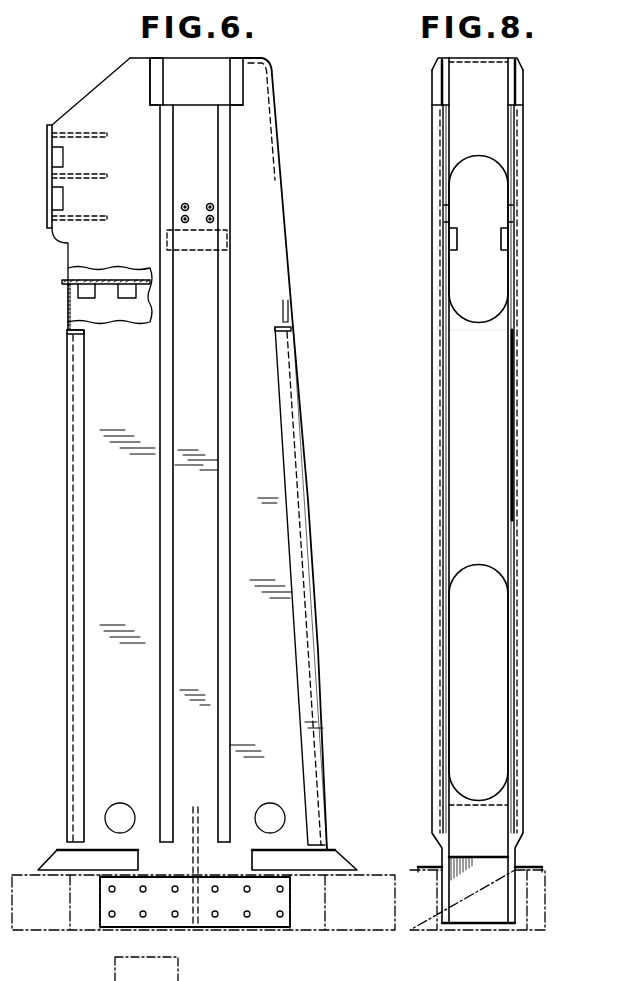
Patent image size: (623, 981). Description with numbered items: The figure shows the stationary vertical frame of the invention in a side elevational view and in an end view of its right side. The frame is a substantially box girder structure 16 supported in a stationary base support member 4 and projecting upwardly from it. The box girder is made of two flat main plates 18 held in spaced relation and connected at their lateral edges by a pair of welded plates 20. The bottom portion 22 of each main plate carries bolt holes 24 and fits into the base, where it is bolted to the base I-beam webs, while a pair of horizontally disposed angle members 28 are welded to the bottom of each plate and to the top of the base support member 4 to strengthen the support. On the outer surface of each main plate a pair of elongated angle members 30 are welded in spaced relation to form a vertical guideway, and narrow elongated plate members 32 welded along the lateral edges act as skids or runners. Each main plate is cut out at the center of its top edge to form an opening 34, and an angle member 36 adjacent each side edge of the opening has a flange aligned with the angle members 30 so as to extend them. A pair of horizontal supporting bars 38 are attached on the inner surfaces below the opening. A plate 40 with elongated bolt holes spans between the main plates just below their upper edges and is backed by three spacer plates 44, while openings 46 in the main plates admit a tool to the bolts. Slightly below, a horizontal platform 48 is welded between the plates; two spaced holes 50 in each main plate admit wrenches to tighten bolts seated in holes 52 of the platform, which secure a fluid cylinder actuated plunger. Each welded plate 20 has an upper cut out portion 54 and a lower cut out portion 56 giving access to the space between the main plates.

In FIG. 6, the stationary base support member 4 is at (368, 875).
In FIG. 8, the stationary base support member 4 is at (477, 900).
In FIG. 6, the box girder structure 16 is at (296, 232).
In FIG. 8, the box girder structure 16 is at (530, 232).
In FIG. 6, the flat main plates 18 is at (290, 278).
In FIG. 8, the flat main plates 18 is at (508, 412).
In FIG. 6, the welded plates 20 is at (312, 300).
In FIG. 8, the welded plates 20 is at (484, 522).
In FIG. 6, the bottom portion 22 is at (228, 922).
In FIG. 8, the bottom portion 22 is at (445, 928).
In FIG. 6, the bolt holes 24 is at (280, 893).
In FIG. 6, the horizontally disposed angle members 28 is at (328, 850).
In FIG. 8, the horizontally disposed angle members 28 is at (418, 880).
In FIG. 6, the elongated angle members 30 is at (222, 550).
In FIG. 8, the elongated angle members 30 is at (540, 372).
In FIG. 6, the narrow elongated plate members 32 is at (283, 550).
In FIG. 8, the narrow elongated plate members 32 is at (540, 412).
In FIG. 6, the opening 34 is at (232, 72).
In FIG. 6, the angle member 36 is at (285, 92).
In FIG. 8, the angle member 36 is at (540, 78).
In FIG. 6, the horizontal supporting bars 38 is at (180, 252).
In FIG. 8, the horizontal supporting bars 38 is at (500, 238).
In FIG. 6, the plate 40 is at (47, 143).
In FIG. 6, the spacer plates 44 is at (105, 140).
In FIG. 6, the openings 46 is at (52, 192).
In FIG. 6, the horizontal platform 48 is at (62, 280).
In FIG. 6, the spaced holes 50 is at (126, 312).
In FIG. 6, the holes 52 is at (128, 280).
In FIG. 8, the upper cut out portion 54 is at (466, 313).
In FIG. 8, the lower cut out portion 56 is at (500, 580).